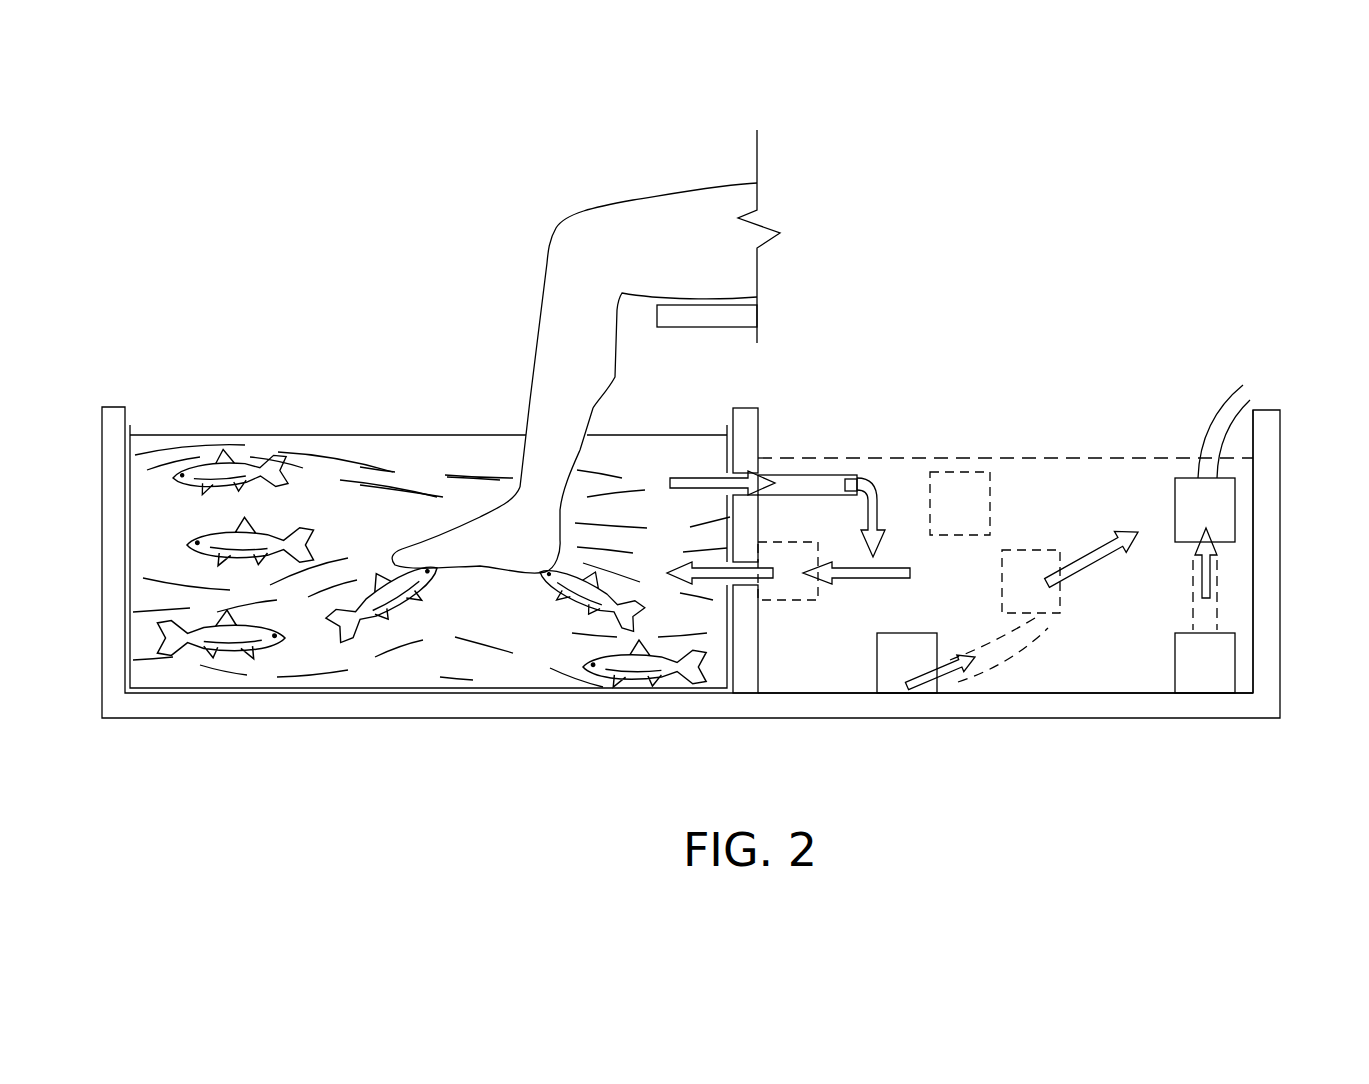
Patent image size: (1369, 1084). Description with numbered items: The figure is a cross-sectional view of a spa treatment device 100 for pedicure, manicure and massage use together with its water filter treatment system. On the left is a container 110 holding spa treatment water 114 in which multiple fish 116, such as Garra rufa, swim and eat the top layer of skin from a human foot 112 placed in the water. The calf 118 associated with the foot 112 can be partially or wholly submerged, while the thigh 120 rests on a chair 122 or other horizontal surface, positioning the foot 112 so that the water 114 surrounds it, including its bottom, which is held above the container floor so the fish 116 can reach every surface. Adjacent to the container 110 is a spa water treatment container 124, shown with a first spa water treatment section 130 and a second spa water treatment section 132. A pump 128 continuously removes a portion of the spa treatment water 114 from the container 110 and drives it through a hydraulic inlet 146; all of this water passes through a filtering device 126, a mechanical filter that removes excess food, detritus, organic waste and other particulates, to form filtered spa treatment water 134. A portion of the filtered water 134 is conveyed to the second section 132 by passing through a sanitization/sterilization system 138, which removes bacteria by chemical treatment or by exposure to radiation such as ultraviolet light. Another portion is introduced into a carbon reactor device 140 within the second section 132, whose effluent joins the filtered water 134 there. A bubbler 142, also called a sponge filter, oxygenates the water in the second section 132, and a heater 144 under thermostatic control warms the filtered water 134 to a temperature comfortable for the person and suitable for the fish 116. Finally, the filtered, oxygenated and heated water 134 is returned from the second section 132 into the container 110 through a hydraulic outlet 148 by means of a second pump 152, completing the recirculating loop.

The spa treatment device 100 is at (947, 277).
The container 110 is at (102, 500).
The human foot 112 is at (537, 515).
The spa treatment water 114 is at (430, 561).
The fish 116 is at (183, 487).
The calf 118 is at (615, 378).
The thigh 120 is at (586, 350).
The chair 122 is at (727, 328).
The spa water treatment container 124 is at (1270, 565).
The filtering device 126 is at (830, 480).
The pump 128 is at (893, 675).
The first spa water treatment section 130 is at (1005, 665).
The second spa water treatment section 132 is at (1140, 447).
The filtered spa treatment water 134 is at (1005, 484).
The sanitization/sterilization system 138 is at (1197, 683).
The carbon reactor device 140 is at (1070, 572).
The bubbler 142 is at (1212, 463).
The heater 144 is at (960, 503).
The hydraulic inlet 146 is at (772, 478).
The hydraulic outlet 148 is at (740, 577).
The second pump 152 is at (788, 571).